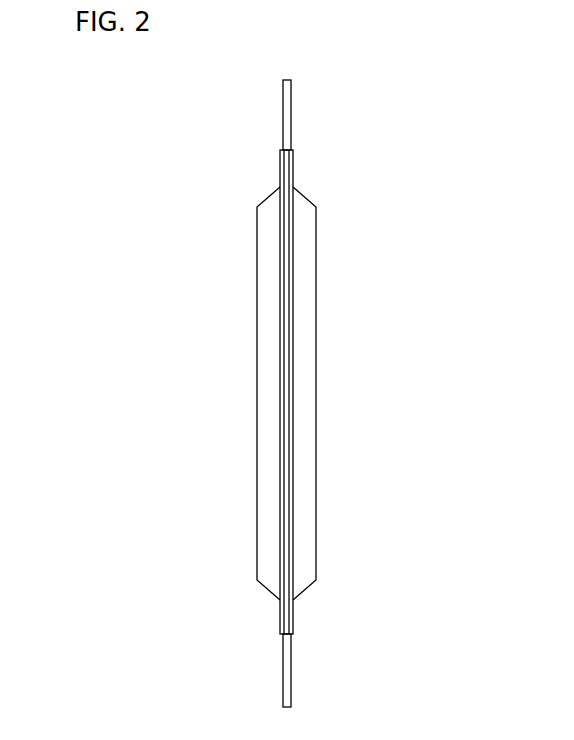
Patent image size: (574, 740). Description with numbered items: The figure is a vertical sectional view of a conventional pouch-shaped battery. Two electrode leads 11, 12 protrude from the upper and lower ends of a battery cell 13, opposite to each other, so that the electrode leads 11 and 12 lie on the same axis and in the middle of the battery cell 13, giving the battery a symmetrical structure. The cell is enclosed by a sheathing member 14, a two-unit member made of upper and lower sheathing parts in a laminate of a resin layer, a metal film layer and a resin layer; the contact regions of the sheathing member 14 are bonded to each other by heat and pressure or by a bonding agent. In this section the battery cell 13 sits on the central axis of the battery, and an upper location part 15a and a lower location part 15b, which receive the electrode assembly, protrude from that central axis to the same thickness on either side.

The electrode lead 11 is at (291, 108).
The electrode lead 12 is at (291, 668).
The battery cell 13 is at (280, 392).
The sheathing member 14 is at (282, 345).
The upper location part 15a is at (257, 458).
The lower location part 15b is at (316, 262).